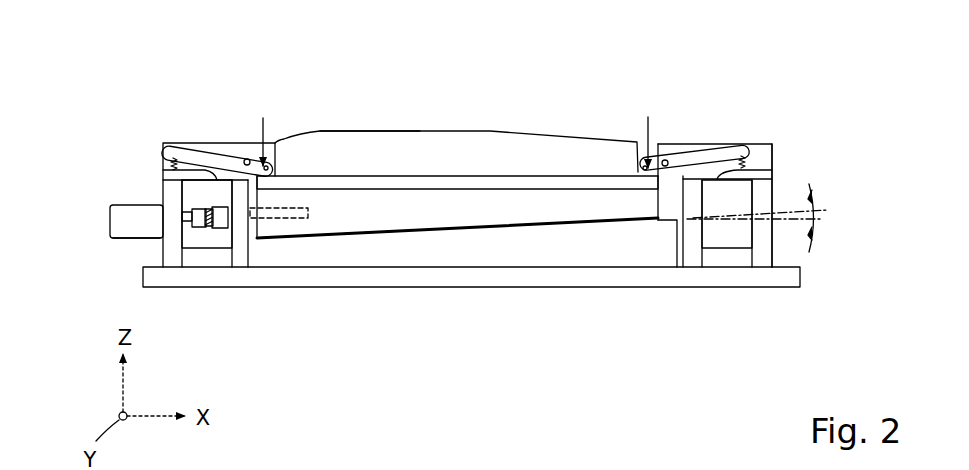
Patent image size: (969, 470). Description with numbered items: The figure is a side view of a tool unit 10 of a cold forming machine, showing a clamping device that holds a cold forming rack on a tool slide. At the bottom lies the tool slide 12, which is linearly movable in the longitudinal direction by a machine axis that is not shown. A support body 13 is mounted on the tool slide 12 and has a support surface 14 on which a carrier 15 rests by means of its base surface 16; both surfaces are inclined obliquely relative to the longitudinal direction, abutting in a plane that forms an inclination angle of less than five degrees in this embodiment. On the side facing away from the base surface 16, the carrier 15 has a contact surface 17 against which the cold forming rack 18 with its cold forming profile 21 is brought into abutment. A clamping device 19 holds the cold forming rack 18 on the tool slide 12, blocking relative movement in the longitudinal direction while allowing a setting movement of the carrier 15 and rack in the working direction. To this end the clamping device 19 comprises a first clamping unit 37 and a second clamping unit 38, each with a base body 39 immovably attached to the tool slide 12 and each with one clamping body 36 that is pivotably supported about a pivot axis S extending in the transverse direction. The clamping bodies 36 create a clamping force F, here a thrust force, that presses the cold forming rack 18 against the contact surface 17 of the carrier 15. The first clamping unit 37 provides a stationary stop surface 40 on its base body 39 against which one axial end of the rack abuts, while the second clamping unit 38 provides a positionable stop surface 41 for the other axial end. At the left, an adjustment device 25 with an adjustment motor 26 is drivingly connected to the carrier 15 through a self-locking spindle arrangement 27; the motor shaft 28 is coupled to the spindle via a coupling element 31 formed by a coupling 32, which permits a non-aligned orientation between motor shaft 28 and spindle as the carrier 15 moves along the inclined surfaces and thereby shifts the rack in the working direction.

The tool unit 10 is at (488, 175).
The tool slide 12 is at (499, 279).
The support body 13 is at (589, 250).
The support surface 14 is at (531, 215).
The carrier 15 is at (457, 200).
The base surface 16 is at (378, 236).
The contact surface 17 is at (467, 176).
The cold forming rack 18 is at (456, 109).
The clamping device 19 is at (786, 132).
The cold forming profile 21 is at (333, 126).
The adjustment device 25 is at (96, 241).
The adjustment motor 26 is at (123, 233).
The spindle arrangement 27 is at (272, 227).
The motor shaft 28 is at (188, 222).
The coupling element 31 is at (196, 205).
The coupling 32 is at (216, 217).
The clamping body 36 is at (187, 152).
The first clamping unit 37 is at (154, 127).
The second clamping unit 38 is at (786, 169).
The base body 39 is at (221, 258).
The stationary stop surface 40 is at (285, 149).
The positionable stop surface 41 is at (636, 161).
The pivot axis S is at (245, 159).
The clamping force F is at (262, 130).